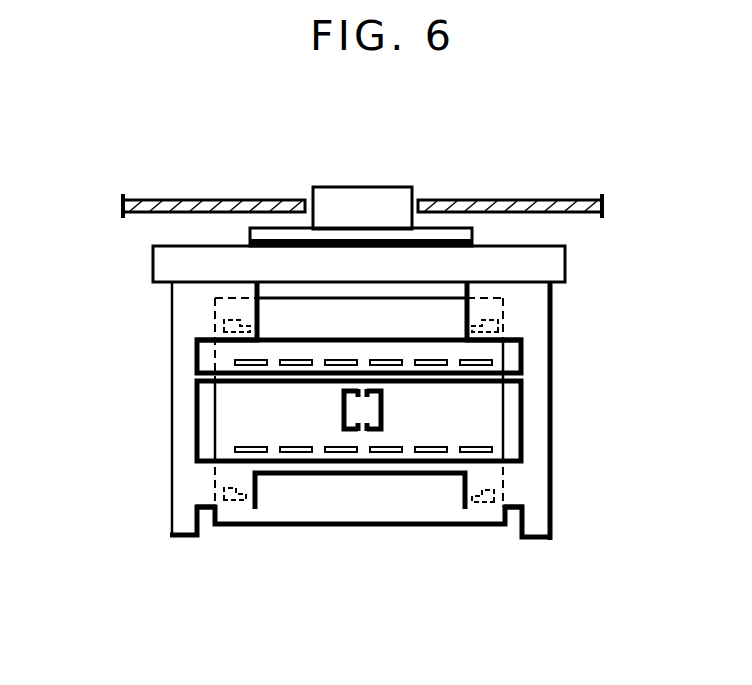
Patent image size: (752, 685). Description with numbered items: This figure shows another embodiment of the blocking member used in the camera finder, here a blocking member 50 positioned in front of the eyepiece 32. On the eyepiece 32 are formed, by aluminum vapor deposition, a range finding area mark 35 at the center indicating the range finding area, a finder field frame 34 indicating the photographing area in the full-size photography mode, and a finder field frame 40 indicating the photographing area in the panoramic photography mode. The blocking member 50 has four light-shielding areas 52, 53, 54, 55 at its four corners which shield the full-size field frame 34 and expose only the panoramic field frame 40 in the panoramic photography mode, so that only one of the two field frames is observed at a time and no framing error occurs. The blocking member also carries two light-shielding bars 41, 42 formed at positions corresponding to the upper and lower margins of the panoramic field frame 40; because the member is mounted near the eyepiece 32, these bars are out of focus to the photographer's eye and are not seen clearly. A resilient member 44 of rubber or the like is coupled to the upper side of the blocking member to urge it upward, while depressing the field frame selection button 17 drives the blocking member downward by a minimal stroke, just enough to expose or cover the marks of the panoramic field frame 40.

The field frame selection button 17 is at (382, 200).
The eyepiece 32 is at (327, 560).
The finder field frame 34 is at (500, 321).
The range finding area mark 35 is at (340, 408).
The finder field frame 40 is at (359, 371).
The light-shielding bar 41 is at (432, 388).
The light-shielding bar 42 is at (399, 477).
The resilient member 44 is at (555, 270).
The blocking member 50 is at (353, 423).
The light-shielding area 52 is at (512, 498).
The light-shielding area 53 is at (207, 497).
The light-shielding area 54 is at (188, 312).
The light-shielding area 55 is at (535, 310).